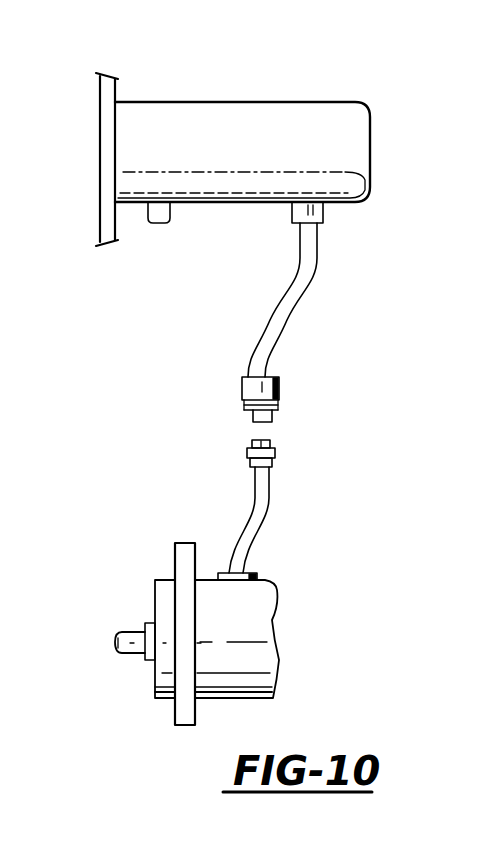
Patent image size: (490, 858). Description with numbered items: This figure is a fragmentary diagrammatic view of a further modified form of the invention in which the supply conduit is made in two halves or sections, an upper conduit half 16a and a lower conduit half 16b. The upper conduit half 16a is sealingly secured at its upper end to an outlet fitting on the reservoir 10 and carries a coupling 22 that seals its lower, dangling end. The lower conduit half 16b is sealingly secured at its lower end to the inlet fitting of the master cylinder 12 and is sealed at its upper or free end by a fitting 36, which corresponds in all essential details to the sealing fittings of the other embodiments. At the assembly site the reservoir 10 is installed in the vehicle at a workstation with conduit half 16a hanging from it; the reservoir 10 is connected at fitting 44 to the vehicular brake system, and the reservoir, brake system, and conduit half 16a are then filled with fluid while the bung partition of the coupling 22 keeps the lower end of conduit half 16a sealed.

The reservoir 10 is at (185, 107).
The fitting 44 is at (172, 208).
The supply conduit half 16a is at (307, 272).
The coupling 22 is at (280, 397).
The fitting 36 is at (272, 463).
The supply conduit half 16b is at (250, 527).
The master cylinder 12 is at (266, 618).